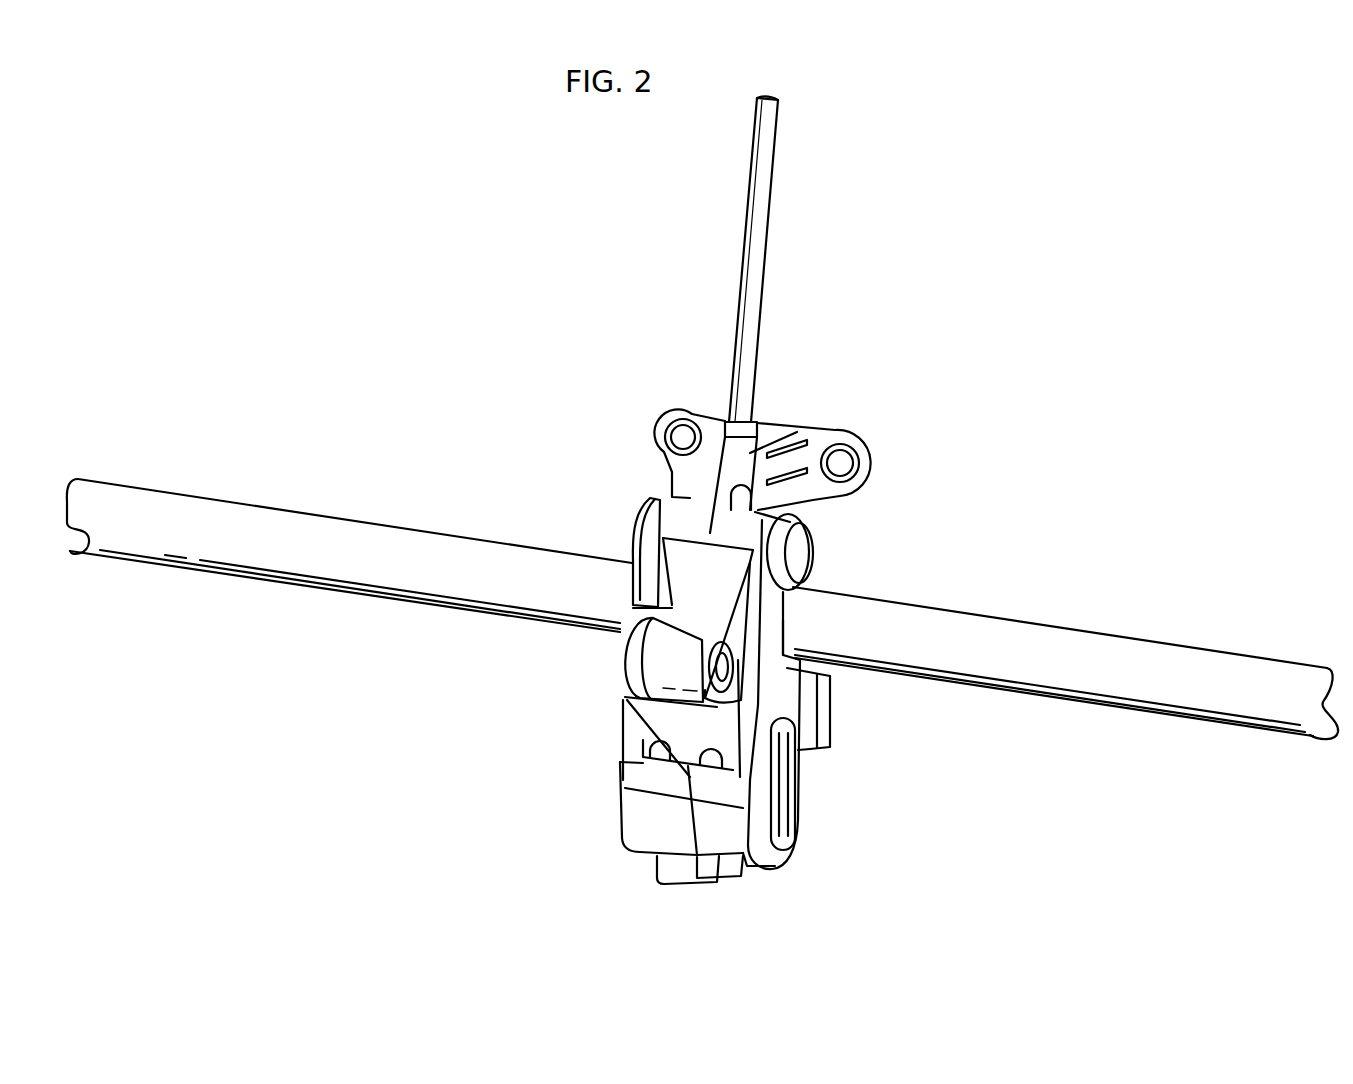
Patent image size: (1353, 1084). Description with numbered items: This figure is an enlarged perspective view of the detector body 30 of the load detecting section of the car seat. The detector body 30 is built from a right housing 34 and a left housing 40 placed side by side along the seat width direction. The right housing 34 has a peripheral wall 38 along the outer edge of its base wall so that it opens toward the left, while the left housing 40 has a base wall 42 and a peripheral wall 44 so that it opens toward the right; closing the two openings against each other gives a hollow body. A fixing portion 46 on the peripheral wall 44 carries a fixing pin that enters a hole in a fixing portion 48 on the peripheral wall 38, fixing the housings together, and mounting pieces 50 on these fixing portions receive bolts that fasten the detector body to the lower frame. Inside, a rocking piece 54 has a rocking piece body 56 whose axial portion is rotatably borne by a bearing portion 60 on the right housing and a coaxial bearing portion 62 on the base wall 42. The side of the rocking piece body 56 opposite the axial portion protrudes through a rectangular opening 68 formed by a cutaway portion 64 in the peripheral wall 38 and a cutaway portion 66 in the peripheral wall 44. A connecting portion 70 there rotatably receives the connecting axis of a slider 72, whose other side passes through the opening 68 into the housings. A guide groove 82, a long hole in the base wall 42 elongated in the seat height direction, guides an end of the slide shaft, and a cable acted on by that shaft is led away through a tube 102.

The detector body 30 is at (878, 412).
The right housing 34 is at (623, 822).
The peripheral wall 38 is at (636, 855).
The left housing 40 is at (788, 858).
The base wall 42 is at (787, 703).
The peripheral wall 44 is at (750, 872).
The fixing portion 46 is at (770, 455).
The fixing portion 48 is at (712, 442).
The mounting pieces 50 is at (668, 422).
The rocking piece 54 is at (707, 581).
The rocking piece body 56 is at (723, 590).
The bearing portion 60 is at (633, 533).
The bearing portion 62 is at (813, 553).
The cutaway portion 64 is at (650, 745).
The cutaway portion 66 is at (787, 791).
The rectangular opening 68 is at (682, 553).
The connecting portion 70 is at (733, 648).
The slider 72 is at (625, 705).
The guide groove 82 is at (790, 824).
The tube 102 is at (764, 285).